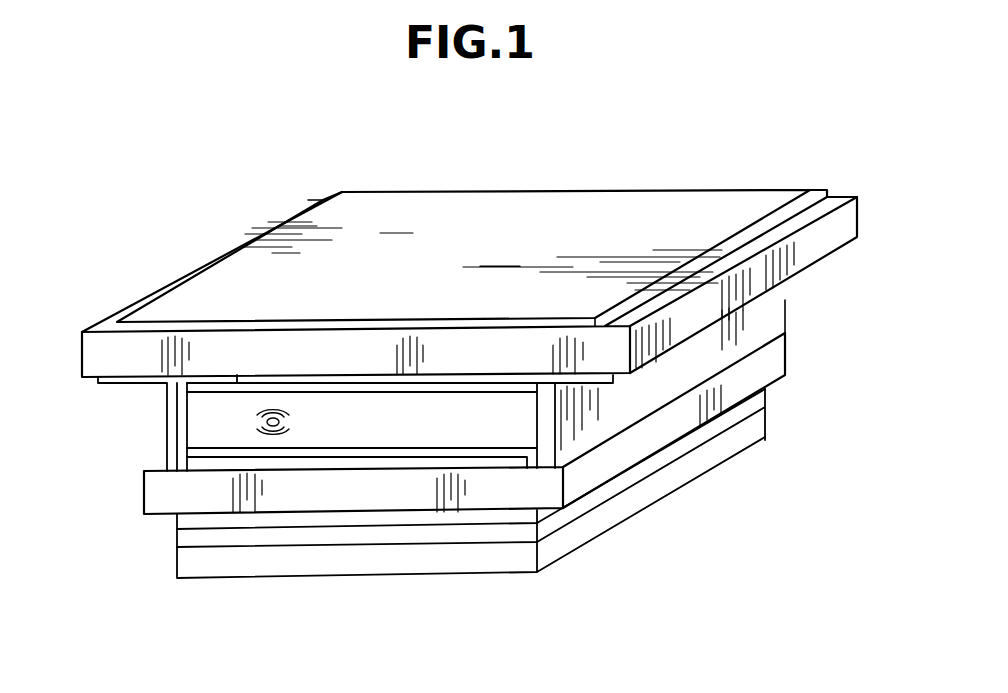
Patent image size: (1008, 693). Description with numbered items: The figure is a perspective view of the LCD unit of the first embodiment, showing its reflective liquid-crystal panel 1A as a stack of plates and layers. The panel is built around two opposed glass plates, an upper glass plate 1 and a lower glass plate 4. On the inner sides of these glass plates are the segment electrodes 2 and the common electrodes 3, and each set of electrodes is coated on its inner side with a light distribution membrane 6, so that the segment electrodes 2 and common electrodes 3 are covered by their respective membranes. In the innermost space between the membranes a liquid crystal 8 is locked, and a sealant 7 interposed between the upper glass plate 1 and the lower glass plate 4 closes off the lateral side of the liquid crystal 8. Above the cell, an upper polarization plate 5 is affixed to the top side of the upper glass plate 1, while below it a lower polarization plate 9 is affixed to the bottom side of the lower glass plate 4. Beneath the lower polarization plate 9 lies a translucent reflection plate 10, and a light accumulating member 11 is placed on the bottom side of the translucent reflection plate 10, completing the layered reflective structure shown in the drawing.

The upper glass plate 1 is at (842, 237).
The reflective liquid-crystal panel 1A is at (818, 329).
The segment electrodes 2 is at (599, 384).
The common electrodes 3 is at (203, 465).
The lower glass plate 4 is at (580, 482).
The upper polarization plate 5 is at (696, 197).
The light distribution membrane 6 is at (417, 450).
The sealant 7 is at (548, 428).
The liquid crystal 8 is at (267, 405).
The lower polarization plate 9 is at (503, 518).
The translucent reflection plate 10 is at (433, 537).
The light accumulating member 11 is at (338, 575).